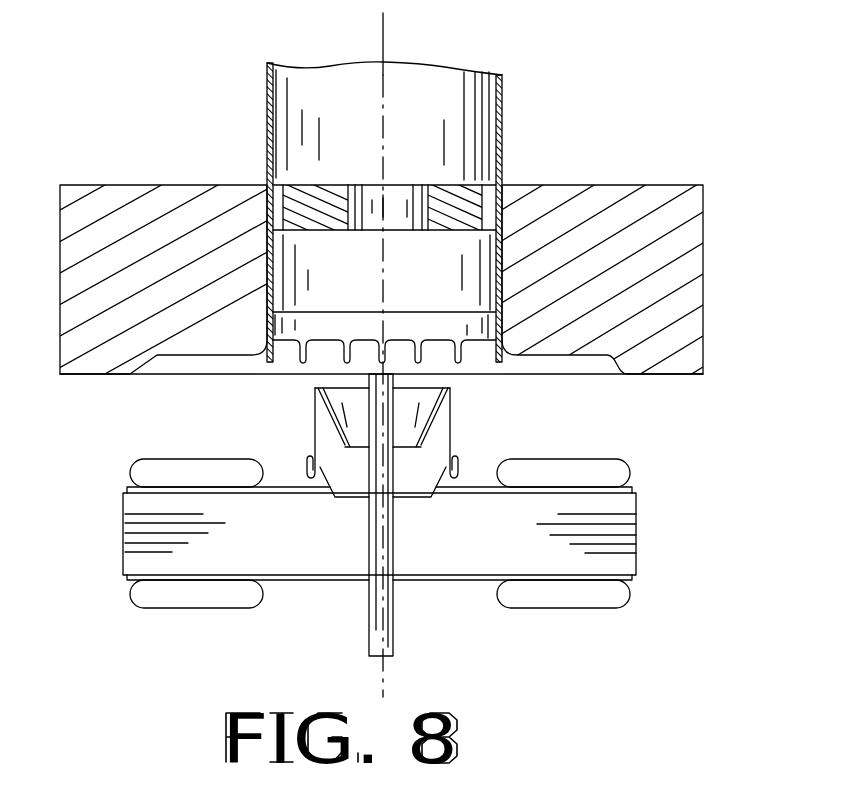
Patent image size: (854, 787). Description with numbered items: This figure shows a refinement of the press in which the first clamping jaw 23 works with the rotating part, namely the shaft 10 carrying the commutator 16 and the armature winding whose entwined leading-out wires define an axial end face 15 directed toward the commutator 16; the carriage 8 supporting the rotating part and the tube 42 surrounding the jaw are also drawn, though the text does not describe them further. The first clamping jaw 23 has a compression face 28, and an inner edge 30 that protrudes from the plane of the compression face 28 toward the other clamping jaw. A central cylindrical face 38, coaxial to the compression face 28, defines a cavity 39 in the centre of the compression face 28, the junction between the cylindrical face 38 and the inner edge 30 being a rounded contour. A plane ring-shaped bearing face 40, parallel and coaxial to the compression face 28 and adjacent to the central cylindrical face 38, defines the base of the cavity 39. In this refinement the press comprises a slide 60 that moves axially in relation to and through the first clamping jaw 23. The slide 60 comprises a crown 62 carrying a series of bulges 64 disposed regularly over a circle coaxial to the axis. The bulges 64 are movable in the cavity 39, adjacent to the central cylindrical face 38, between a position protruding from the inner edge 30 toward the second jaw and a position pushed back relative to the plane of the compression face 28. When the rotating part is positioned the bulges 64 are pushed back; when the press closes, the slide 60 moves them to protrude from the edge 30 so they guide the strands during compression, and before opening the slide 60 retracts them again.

The carriage body 8 is at (600, 503).
The shaft 10 is at (380, 632).
The axial end face 15 is at (595, 459).
The commutator 16 is at (413, 467).
The first clamping jaw 23 is at (105, 202).
The compression face 28 is at (210, 355).
The inner edge 30 is at (157, 372).
The central cylindrical face 38 is at (275, 273).
The cavity 39 is at (450, 303).
The bearing face 40 is at (500, 272).
The tube assembly 42 is at (500, 272).
The slide 60 is at (502, 130).
The crown 62 is at (327, 323).
The bulges 64 is at (420, 362).